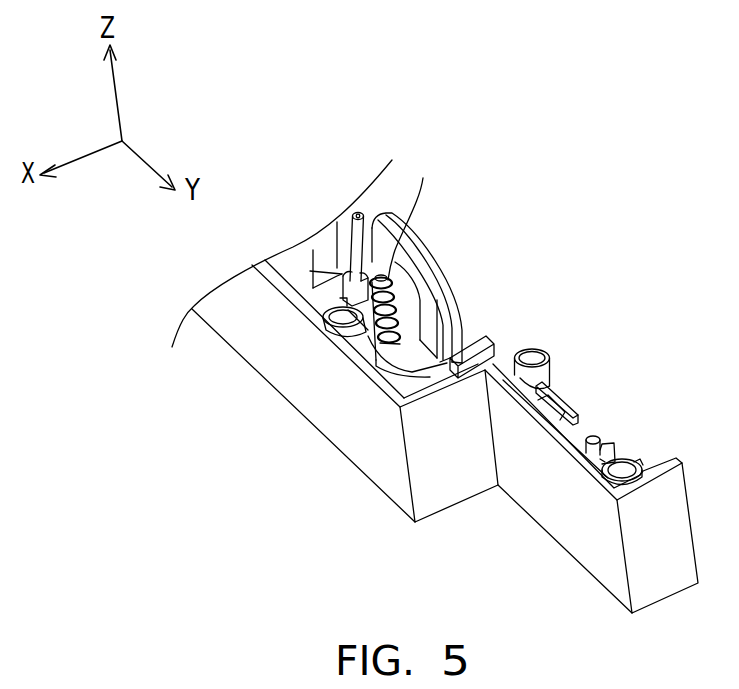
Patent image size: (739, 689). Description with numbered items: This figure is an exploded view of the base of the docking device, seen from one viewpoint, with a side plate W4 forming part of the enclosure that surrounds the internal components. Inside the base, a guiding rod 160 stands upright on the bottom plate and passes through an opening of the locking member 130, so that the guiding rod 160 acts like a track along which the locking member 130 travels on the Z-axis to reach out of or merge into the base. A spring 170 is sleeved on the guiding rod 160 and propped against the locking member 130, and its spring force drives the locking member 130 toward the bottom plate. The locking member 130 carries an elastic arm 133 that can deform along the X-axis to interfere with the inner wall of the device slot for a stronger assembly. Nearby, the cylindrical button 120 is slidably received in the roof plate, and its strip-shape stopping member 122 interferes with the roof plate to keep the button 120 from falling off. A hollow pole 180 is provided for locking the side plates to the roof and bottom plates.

The guiding rod 160 is at (362, 212).
The elastic arm 133 is at (397, 270).
The locking member 130 is at (458, 288).
The button 120 is at (553, 367).
The strip-shape stopping member 122 is at (567, 401).
The hollow pole 180 is at (633, 460).
The spring 170 is at (375, 333).
The side plate W4 is at (262, 339).